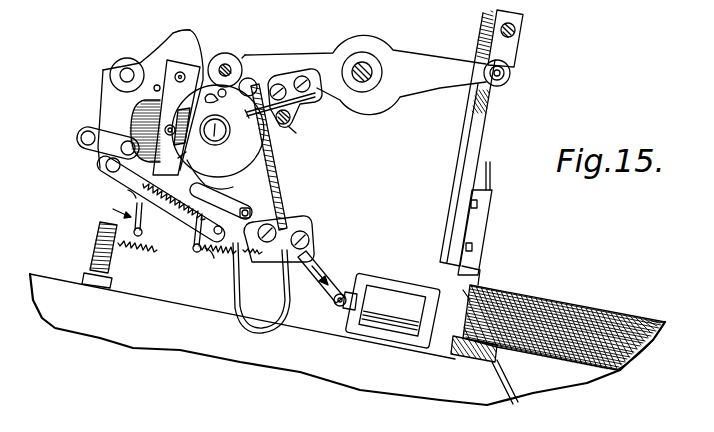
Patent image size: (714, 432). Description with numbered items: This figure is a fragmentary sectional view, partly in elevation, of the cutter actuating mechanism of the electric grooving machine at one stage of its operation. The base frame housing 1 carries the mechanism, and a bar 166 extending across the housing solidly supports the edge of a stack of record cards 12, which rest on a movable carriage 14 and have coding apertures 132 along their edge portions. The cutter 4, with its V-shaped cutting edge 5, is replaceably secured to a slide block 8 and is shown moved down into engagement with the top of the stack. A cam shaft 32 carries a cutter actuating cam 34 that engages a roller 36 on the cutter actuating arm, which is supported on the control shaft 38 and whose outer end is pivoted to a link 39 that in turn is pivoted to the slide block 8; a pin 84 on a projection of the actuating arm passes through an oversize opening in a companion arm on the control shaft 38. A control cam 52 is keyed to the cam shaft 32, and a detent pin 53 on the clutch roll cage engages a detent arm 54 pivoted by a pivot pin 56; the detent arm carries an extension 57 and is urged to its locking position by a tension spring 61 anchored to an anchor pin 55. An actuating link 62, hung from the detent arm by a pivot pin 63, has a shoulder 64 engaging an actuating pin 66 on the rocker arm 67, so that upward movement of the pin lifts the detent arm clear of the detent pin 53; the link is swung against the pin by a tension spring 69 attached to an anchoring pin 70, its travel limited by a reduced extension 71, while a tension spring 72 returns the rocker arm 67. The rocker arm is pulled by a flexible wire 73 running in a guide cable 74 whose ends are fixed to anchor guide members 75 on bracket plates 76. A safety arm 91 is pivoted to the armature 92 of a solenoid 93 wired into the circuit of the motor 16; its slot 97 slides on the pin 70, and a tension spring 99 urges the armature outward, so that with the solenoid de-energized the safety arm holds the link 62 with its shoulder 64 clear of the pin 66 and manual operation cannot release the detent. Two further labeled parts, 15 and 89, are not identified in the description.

The base frame housing 1 is at (48, 320).
The cutter 4 is at (480, 222).
The V-shaped cutting edge 5 is at (479, 272).
The slide block 8 is at (490, 108).
The record cards 12 is at (633, 321).
The carriage 14 is at (585, 382).
The link pin 15 is at (283, 132).
The motor 16 is at (305, 106).
The cam shaft 32 is at (218, 142).
The cutter actuating cam 34 is at (170, 48).
The roller 36 is at (231, 59).
The control shaft 38 is at (376, 73).
The link 39 is at (512, 48).
The control cam 52 is at (264, 151).
The detent pin 53 is at (218, 100).
The detent arm 54 is at (152, 67).
The anchor pin 55 is at (128, 199).
The pivot pin 56 is at (120, 74).
The extension 57 is at (303, 57).
The tension spring 61 is at (128, 120).
The actuating link 62 is at (176, 156).
The pivot pin 63 is at (186, 74).
The shoulder 64 is at (190, 236).
The actuating pin 66 is at (150, 222).
The actuating rocker arm 67 is at (221, 178).
The tension spring 69 is at (210, 250).
The anchoring pin 70 is at (160, 186).
The reduced extension 71 is at (132, 228).
The tension spring 72 is at (220, 255).
The flexible wire 73 is at (270, 218).
The guide cable 74 is at (285, 183).
The anchor guide members 75 is at (257, 104).
The bracket plates 76 is at (298, 226).
The pin 84 is at (298, 126).
The rack 89 is at (168, 125).
The safety arm 91 is at (202, 199).
The armature 92 is at (345, 286).
The solenoid 93 is at (393, 293).
The slot 97 is at (128, 190).
The tension spring 99 is at (136, 253).
The coding apertures 132 is at (470, 297).
The bar 166 is at (477, 356).